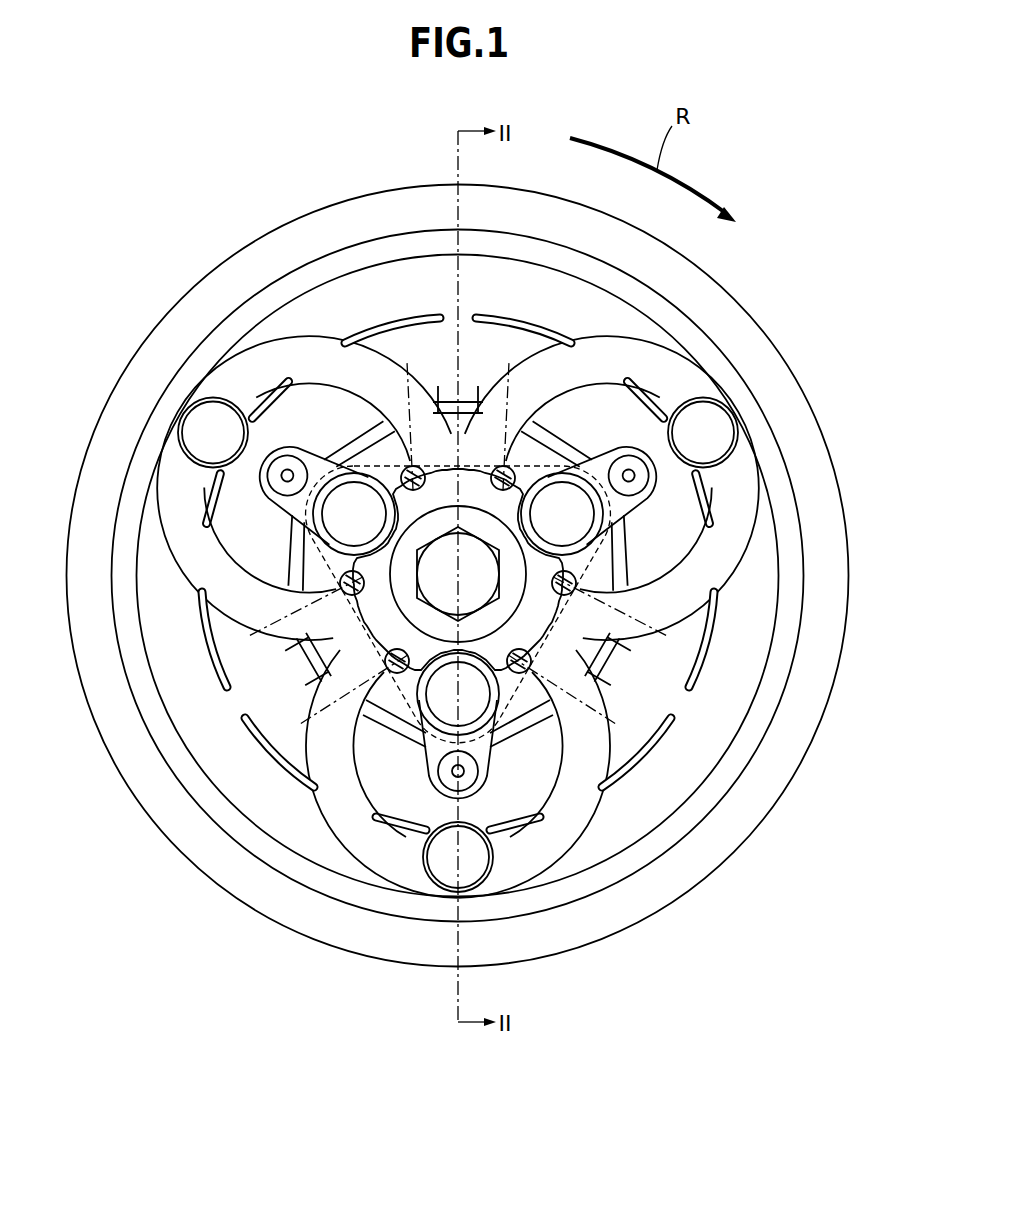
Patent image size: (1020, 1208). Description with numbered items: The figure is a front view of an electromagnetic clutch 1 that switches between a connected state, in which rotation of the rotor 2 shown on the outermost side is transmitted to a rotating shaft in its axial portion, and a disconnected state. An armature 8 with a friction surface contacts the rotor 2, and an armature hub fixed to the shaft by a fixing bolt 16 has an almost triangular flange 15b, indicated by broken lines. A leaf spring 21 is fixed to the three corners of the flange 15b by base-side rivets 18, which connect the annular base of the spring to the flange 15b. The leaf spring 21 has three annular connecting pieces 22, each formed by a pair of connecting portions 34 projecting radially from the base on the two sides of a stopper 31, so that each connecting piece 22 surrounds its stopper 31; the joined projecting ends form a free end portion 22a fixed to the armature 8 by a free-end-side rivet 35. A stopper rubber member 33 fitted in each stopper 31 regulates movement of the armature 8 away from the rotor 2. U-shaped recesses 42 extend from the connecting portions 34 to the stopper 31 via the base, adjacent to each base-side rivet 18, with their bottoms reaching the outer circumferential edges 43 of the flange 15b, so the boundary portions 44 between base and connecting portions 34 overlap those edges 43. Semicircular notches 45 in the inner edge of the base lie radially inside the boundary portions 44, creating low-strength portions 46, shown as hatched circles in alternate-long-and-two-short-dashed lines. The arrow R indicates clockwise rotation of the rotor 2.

The electromagnetic clutch 1 is at (172, 175).
The rotor 2 is at (290, 225).
The armature 8 is at (384, 257).
The flange 15b is at (440, 790).
The fixing bolt 16 is at (450, 532).
The base-side rivet 18 is at (203, 397).
The leaf spring 21 is at (277, 333).
The connecting piece 22 is at (250, 348).
The free end portion 22a is at (174, 450).
The stopper 31 is at (331, 452).
The stopper rubber member 33 is at (185, 557).
The connecting portion 34 is at (318, 338).
The free-end-side rivet 35 is at (200, 388).
The U-shaped recess 42 is at (362, 452).
The outer circumferential edge 43 is at (403, 740).
The boundary portion 44 is at (438, 390).
The notch 45 is at (466, 478).
The low-strength portion 46 is at (460, 534).